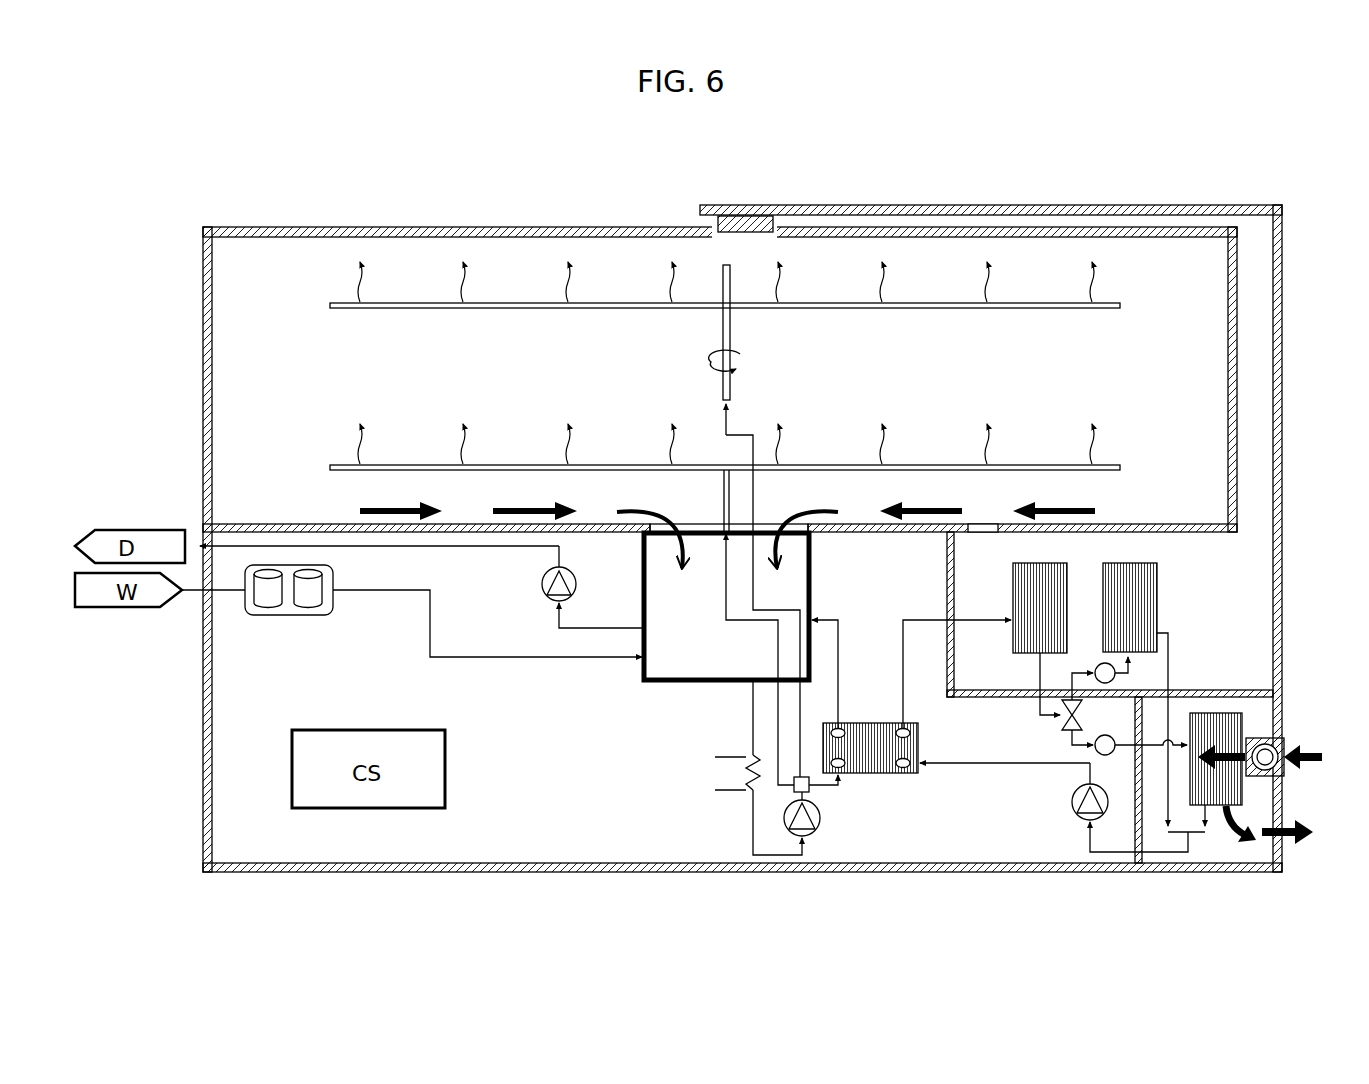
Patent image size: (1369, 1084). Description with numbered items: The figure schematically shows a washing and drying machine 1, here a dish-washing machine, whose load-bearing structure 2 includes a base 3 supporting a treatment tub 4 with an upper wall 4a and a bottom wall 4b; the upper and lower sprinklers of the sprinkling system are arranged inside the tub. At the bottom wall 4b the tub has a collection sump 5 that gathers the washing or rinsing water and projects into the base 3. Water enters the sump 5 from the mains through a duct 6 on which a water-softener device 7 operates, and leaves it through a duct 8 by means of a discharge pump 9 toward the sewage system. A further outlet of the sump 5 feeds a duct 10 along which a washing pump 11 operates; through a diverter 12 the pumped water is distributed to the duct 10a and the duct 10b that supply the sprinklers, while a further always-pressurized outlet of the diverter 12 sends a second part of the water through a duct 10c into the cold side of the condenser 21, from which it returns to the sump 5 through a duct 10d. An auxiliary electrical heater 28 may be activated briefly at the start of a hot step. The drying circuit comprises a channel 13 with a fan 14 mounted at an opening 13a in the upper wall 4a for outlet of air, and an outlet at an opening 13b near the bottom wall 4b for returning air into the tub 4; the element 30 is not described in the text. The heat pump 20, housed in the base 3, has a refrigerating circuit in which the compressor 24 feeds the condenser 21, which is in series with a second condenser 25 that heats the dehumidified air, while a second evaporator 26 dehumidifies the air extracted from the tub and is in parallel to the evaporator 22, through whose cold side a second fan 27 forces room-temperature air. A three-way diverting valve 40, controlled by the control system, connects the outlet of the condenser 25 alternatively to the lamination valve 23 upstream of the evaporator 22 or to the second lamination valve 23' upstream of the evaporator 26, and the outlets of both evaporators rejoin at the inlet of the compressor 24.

The washing and drying machine 1 is at (243, 147).
The load-bearing structure 2 is at (165, 716).
The base 3 is at (200, 800).
The treatment tub 4 is at (720, 342).
The upper wall 4a is at (575, 227).
The bottom wall 4b is at (248, 526).
The collection sump 5 is at (660, 686).
The duct 6 is at (540, 660).
The water-softener device 7 is at (312, 616).
The duct 8 is at (502, 548).
The discharge pump 9 is at (577, 590).
The duct 10 is at (734, 610).
The duct 10a is at (755, 598).
The duct 10b is at (778, 656).
The duct or tube 10c is at (845, 778).
The duct 10d is at (840, 642).
The washing pump 11 is at (821, 828).
The diverter 12 is at (810, 786).
The channel 13 is at (1318, 318).
The opening 13a is at (725, 238).
The opening 13b is at (975, 524).
The fan 14 is at (768, 215).
The heat pump 20 is at (985, 818).
The condenser 21 is at (862, 728).
The evaporator 22 is at (1237, 720).
The lamination valve 23 is at (1092, 749).
The second lamination valve 23' is at (1162, 658).
The compressor 24 is at (1073, 804).
The second condenser 25 is at (1015, 617).
The second evaporator 26 is at (1140, 596).
The second fan 27 is at (1286, 750).
The auxiliary electrical heater 28 is at (725, 790).
The air gap 30 is at (1286, 370).
The diverting valve 40 is at (1058, 715).